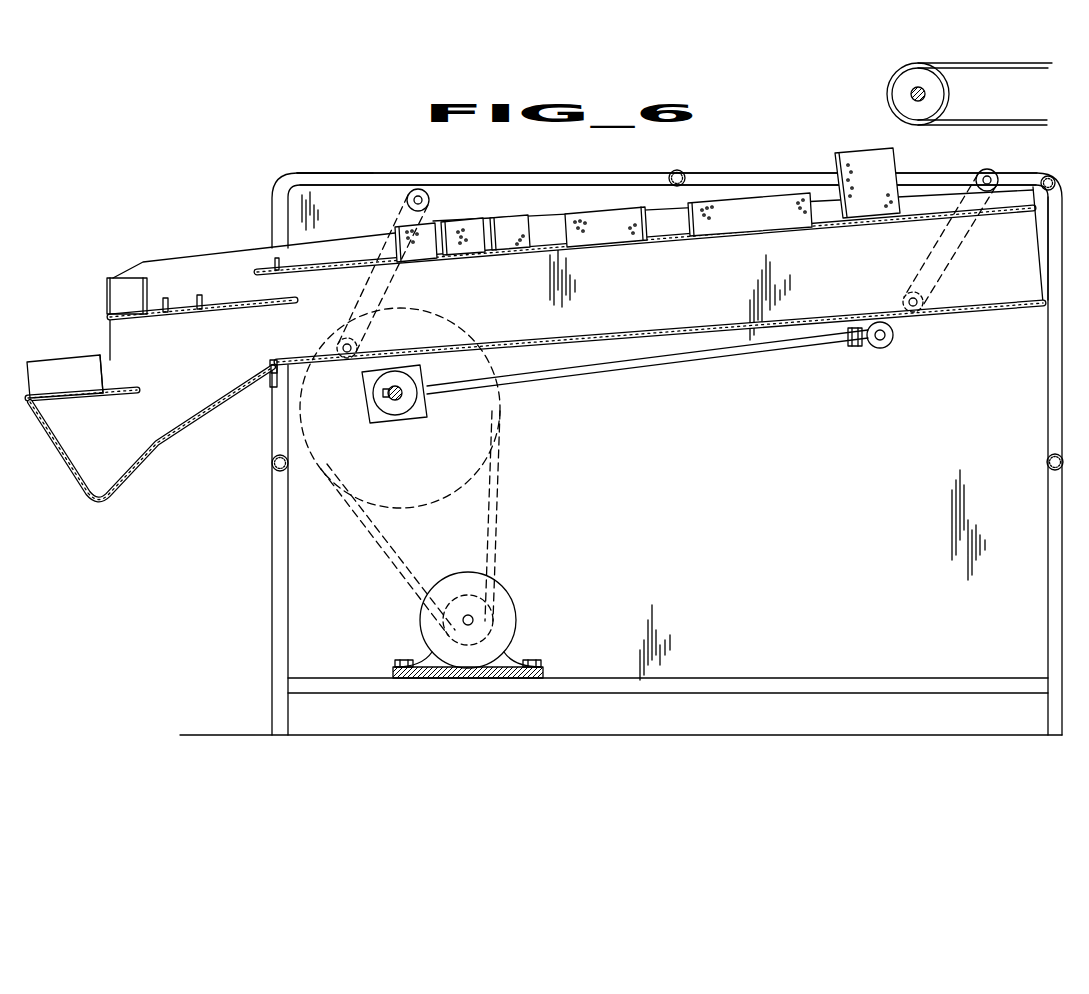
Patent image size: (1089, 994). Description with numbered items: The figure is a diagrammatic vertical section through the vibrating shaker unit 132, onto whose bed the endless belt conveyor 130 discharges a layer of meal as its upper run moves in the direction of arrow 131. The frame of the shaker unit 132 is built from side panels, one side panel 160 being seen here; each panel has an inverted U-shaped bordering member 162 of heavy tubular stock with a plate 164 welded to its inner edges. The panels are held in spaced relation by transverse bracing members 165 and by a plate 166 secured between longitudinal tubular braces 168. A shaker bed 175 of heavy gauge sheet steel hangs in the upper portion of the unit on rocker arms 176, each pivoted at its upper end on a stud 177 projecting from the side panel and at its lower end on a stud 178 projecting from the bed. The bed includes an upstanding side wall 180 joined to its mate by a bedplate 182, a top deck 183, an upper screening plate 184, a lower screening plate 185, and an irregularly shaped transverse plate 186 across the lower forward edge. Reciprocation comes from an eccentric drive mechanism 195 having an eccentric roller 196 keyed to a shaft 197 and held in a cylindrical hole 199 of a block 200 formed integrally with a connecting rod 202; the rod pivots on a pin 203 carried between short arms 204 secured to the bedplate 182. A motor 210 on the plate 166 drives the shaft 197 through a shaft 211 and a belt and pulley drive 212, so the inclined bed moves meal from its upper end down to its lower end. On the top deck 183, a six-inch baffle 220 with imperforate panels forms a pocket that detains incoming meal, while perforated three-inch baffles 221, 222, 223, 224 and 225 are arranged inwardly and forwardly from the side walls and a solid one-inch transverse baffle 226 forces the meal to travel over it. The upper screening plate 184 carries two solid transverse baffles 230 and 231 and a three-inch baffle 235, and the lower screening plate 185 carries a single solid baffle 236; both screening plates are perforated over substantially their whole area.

The endless belt conveyor 130 is at (950, 64).
The arrow 131 is at (1057, 50).
The vibrating shaker unit 132 is at (373, 167).
The side panel 160 is at (720, 166).
The inverted U-shaped bordering member 162 is at (520, 177).
The plate 164 is at (369, 222).
The transverse bracing member 165 is at (669, 178).
The plate 166 is at (470, 677).
The longitudinal tubular brace 168 is at (727, 677).
The shaker bed 175 is at (211, 323).
The rocker arm 176 is at (413, 223).
The stud 177 is at (420, 196).
The stud 178 is at (358, 340).
The side wall 180 is at (650, 251).
The bedplate 182 is at (558, 343).
The top deck 183 is at (662, 240).
The upper screening plate 184 is at (213, 312).
The lower screening plate 185 is at (82, 402).
The transverse plate 186 is at (143, 463).
The eccentric drive mechanism 195 is at (427, 408).
The eccentric roller 196 is at (388, 382).
The shaft 197 is at (396, 402).
The cylindrical hole 199 is at (387, 400).
The block 200 is at (413, 413).
The connecting rod 202 is at (675, 360).
The pin 203 is at (888, 343).
The short arm 204 is at (893, 322).
The motor 210 is at (503, 600).
The shaft 211 is at (473, 620).
The belt and pulley drive 212 is at (505, 488).
The baffle 220 is at (867, 160).
The baffle 221 is at (767, 210).
The baffle 222 is at (607, 225).
The baffle 223 is at (512, 222).
The baffle 224 is at (473, 243).
The baffle 225 is at (417, 245).
The baffle 226 is at (276, 260).
The transverse baffle 230 is at (203, 297).
The transverse baffle 231 is at (167, 298).
The baffle 235 is at (120, 297).
The baffle 236 is at (53, 373).